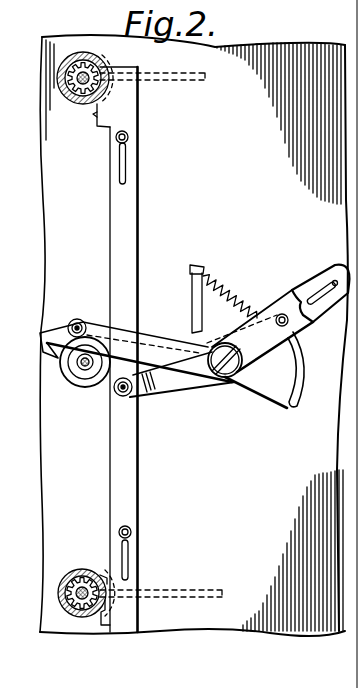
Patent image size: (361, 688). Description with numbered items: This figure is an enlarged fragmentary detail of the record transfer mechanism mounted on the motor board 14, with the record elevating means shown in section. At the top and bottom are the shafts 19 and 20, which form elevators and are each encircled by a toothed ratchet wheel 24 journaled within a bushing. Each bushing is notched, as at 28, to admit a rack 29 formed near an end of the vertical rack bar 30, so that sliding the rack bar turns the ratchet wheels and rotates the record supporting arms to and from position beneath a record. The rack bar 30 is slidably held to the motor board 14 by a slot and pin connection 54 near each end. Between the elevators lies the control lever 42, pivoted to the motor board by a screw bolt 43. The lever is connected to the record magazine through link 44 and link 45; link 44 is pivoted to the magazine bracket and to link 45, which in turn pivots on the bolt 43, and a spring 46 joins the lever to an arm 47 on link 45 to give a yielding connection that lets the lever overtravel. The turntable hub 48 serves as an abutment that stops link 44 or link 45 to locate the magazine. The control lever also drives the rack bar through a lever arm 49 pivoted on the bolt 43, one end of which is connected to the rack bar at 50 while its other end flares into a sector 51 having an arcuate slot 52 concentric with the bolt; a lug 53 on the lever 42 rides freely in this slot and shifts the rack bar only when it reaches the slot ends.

The motor board 14 is at (258, 62).
The shaft 19 is at (95, 77).
The shaft 20 is at (88, 580).
The ratchet wheel 24 is at (76, 57).
The notch 28 is at (90, 55).
The rack 29 is at (95, 116).
The rack bar 30 is at (130, 203).
The control lever 42 is at (312, 280).
The screw bolt 43 is at (224, 385).
The link 44 is at (47, 337).
The link 45 is at (153, 333).
The spring 46 is at (214, 286).
The arm 47 is at (197, 318).
The turntable hub 48 is at (85, 372).
The lever arm 49 is at (183, 390).
The connection 50 is at (140, 398).
The sector 51 is at (270, 392).
The arcuate slot 52 is at (291, 390).
The lug 53 is at (280, 313).
The slot and pin connection 54 is at (128, 136).